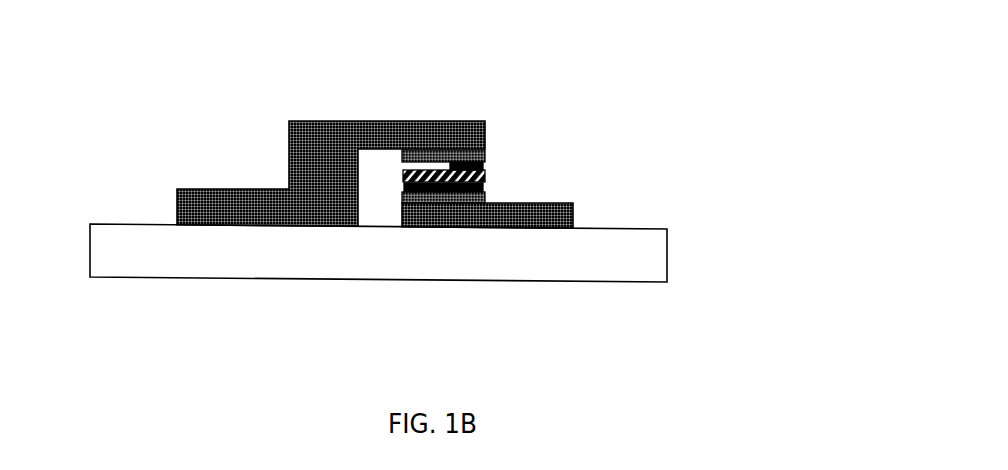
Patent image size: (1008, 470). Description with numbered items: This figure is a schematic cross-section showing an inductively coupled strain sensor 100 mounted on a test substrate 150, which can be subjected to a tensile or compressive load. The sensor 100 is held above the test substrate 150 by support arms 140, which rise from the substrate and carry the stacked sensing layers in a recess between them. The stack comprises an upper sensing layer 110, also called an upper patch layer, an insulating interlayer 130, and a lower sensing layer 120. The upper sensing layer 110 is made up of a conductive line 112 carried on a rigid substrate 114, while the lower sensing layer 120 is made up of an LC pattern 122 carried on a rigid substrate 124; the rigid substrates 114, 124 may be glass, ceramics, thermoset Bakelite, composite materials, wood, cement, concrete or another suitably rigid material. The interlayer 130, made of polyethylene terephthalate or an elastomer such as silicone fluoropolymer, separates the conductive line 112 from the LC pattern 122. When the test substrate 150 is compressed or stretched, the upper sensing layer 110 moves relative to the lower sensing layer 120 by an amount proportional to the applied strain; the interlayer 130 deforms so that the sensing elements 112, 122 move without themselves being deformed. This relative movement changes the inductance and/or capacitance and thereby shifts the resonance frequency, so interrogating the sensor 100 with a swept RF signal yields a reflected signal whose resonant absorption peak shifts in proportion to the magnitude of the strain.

The strain sensor 100 is at (379, 170).
The upper sensing layer 110 is at (596, 86).
The conductive line 112 is at (483, 165).
The rigid substrate 114 is at (486, 152).
The lower sensing layer 120 is at (621, 187).
The LC pattern 122 is at (484, 187).
The rigid substrate 124 is at (489, 197).
The insulating interlayer 130 is at (485, 176).
The support arms 140 is at (478, 231).
The test substrate 150 is at (227, 281).